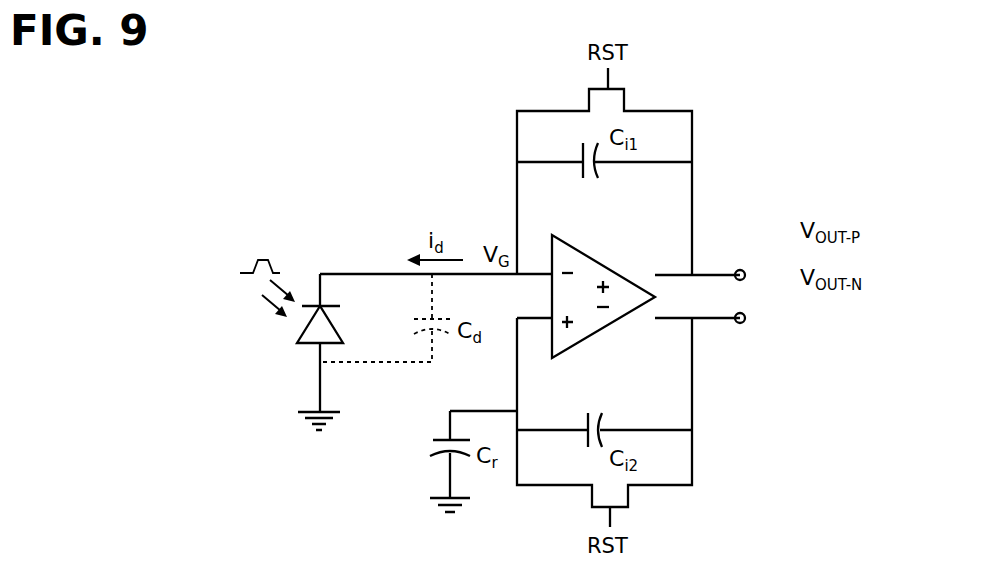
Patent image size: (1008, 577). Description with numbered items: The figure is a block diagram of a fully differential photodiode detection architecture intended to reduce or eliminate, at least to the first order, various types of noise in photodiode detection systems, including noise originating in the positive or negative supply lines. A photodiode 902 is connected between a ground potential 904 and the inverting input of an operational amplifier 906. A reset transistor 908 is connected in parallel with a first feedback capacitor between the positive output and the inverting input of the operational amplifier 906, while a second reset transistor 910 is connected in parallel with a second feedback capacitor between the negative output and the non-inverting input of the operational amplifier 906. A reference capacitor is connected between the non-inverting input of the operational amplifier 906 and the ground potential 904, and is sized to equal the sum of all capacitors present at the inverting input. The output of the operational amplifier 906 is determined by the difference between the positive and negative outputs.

The photodiode 902 is at (265, 334).
The ground potential 904 is at (336, 410).
The operational amplifier 906 is at (592, 334).
The reset transistor 908 is at (624, 89).
The reset transistor 910 is at (628, 508).